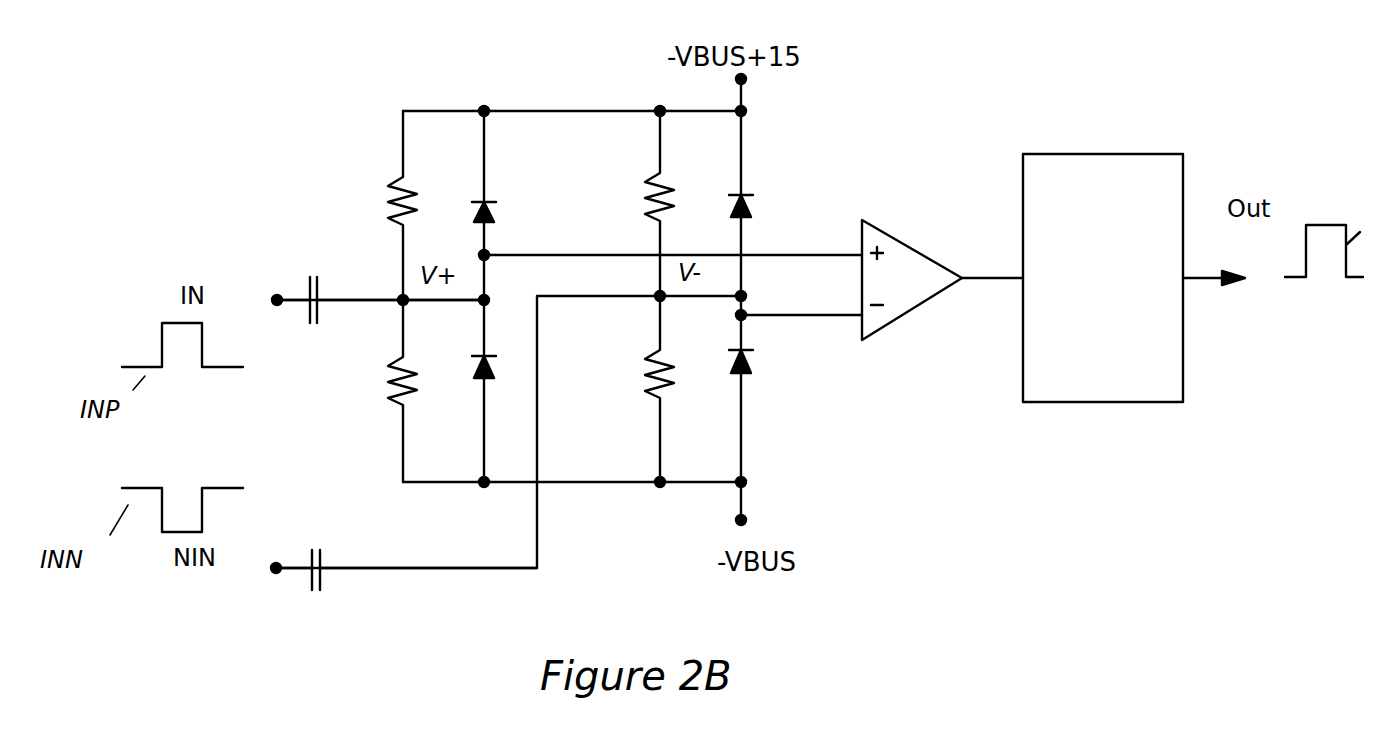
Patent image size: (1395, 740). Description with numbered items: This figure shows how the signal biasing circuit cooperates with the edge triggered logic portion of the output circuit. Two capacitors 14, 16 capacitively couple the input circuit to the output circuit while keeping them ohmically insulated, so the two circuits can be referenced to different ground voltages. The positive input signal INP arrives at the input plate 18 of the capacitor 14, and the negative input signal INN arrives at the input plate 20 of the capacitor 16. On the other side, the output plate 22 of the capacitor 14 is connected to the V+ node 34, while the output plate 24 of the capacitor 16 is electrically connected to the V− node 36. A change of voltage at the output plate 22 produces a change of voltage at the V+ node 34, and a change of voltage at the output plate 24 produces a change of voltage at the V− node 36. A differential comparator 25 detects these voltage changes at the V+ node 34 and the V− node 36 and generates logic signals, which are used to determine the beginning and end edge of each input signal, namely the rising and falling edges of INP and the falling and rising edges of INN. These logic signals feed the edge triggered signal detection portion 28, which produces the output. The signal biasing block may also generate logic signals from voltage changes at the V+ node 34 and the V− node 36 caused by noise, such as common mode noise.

The capacitor 14 is at (314, 256).
The capacitor 16 is at (322, 614).
The input plate 18 is at (286, 280).
The input plate 20 is at (285, 548).
The output plate 22 is at (397, 289).
The output plate 24 is at (424, 556).
The differential comparator 25 is at (997, 210).
The edge triggered signal detection portion 28 is at (1105, 165).
The V+ node 34 is at (399, 306).
The V− node 36 is at (654, 301).